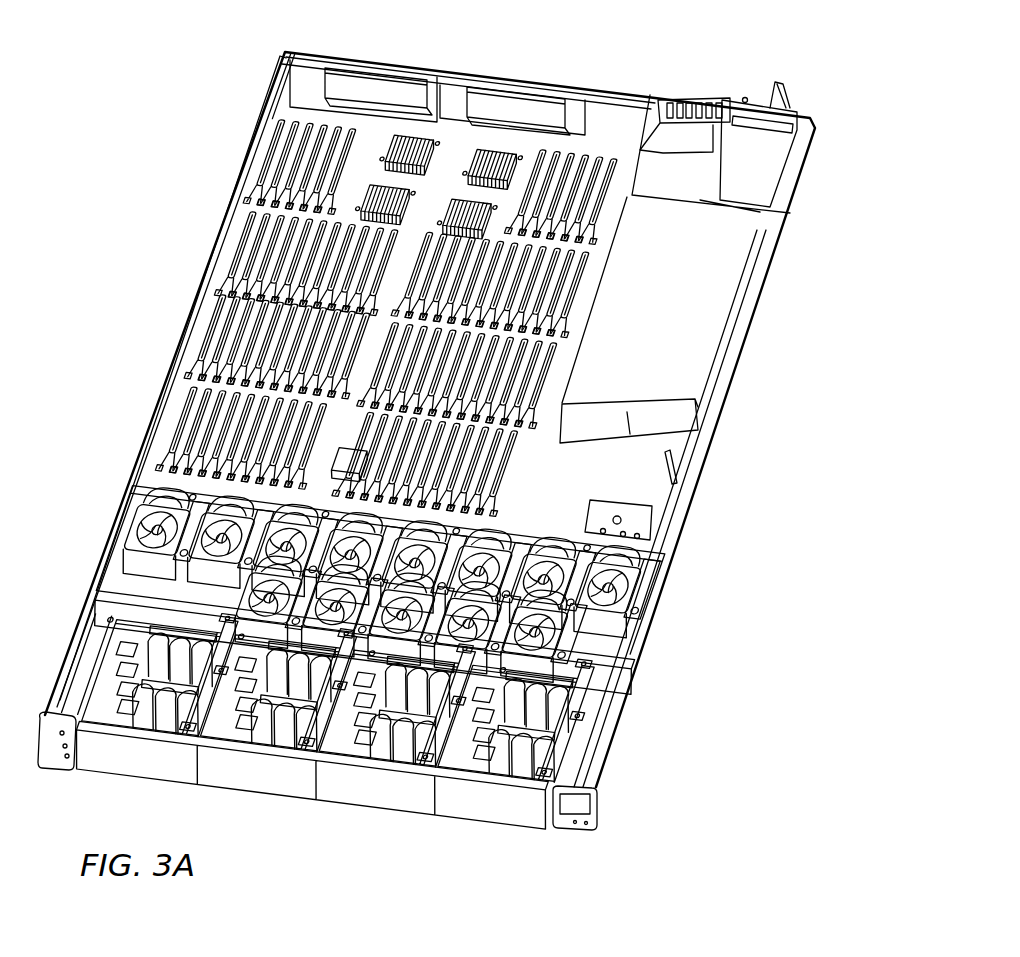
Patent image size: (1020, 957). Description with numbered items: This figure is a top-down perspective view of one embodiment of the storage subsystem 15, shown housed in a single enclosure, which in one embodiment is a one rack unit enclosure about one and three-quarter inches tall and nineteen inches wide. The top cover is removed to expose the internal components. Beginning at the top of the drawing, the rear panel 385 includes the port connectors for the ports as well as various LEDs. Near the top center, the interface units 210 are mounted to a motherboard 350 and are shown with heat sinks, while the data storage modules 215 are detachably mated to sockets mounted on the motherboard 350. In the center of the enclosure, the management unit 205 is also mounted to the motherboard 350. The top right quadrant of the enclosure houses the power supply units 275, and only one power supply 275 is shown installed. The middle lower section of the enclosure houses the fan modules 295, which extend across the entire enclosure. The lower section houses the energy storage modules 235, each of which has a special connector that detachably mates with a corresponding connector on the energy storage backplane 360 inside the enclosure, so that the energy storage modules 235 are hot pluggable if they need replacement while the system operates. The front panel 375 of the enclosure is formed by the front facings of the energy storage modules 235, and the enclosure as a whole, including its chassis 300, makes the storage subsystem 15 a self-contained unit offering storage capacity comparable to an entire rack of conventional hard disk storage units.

The storage subsystem 15 is at (200, 130).
The chassis 300 is at (715, 427).
The power supply unit 275 is at (782, 80).
The rear panel 385 is at (627, 88).
The interface unit 210 is at (430, 122).
The motherboard 350 is at (459, 208).
The data storage module 215 is at (220, 318).
The management unit 205 is at (340, 458).
The fan module 295 is at (163, 505).
The energy storage backplane 360 is at (143, 603).
The energy storage module 235 is at (138, 755).
The front panel 375 is at (533, 817).